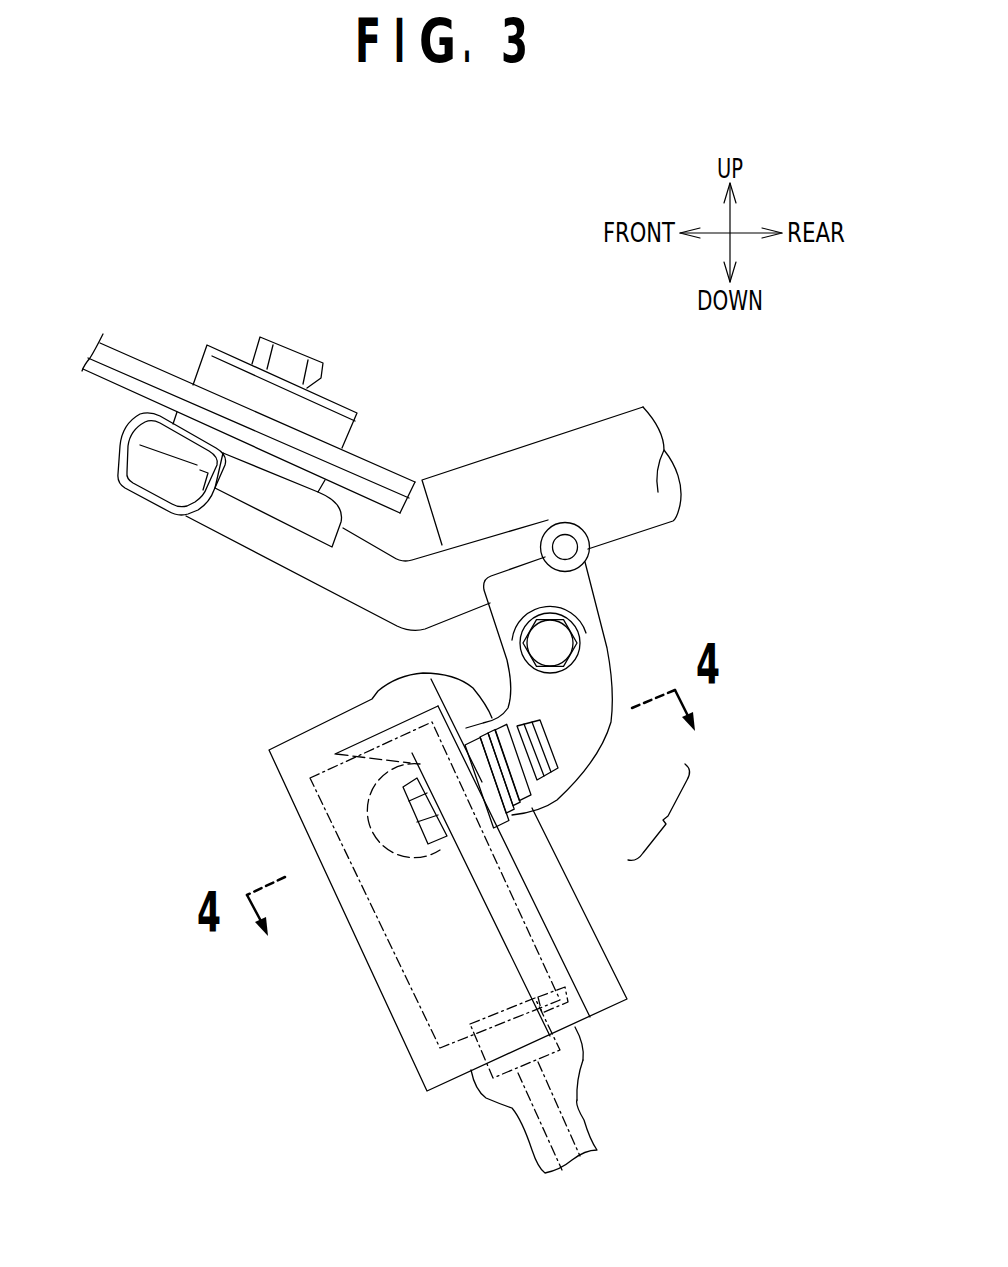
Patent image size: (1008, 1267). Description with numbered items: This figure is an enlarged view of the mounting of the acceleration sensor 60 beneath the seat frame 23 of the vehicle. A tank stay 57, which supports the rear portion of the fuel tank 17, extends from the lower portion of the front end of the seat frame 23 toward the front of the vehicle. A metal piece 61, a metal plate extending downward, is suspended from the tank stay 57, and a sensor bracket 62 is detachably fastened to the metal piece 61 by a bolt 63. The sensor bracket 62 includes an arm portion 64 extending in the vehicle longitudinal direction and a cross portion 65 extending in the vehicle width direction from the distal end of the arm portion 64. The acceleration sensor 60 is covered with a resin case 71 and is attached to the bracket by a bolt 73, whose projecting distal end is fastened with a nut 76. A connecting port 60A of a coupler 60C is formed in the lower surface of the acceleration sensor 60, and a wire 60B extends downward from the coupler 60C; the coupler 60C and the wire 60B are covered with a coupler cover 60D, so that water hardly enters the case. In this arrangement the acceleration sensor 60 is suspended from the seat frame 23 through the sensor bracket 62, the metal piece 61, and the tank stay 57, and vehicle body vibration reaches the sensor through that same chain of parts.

The fuel tank 17 is at (130, 347).
The seat frame 23 is at (565, 443).
The tank stay 57 is at (290, 560).
The metal piece 61 is at (588, 595).
The bolt 63 is at (563, 645).
The sensor bracket 62 is at (587, 792).
The arm portion 64 is at (582, 755).
The cross portion 65 is at (543, 812).
The nut 76 is at (537, 757).
The acceleration sensor 60 is at (383, 933).
The case 71 is at (407, 1012).
The bolt 73 is at (433, 832).
The connecting port 60A is at (540, 1000).
The wire 60B is at (568, 1123).
The coupler 60C is at (578, 1035).
The coupler cover 60D is at (580, 1075).